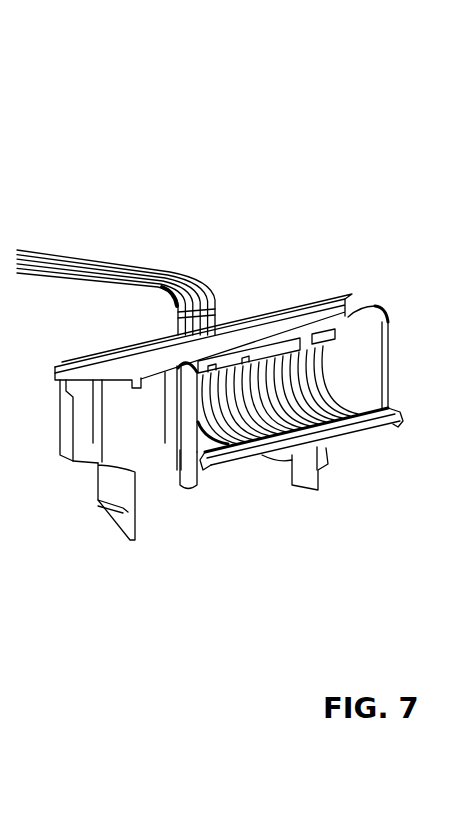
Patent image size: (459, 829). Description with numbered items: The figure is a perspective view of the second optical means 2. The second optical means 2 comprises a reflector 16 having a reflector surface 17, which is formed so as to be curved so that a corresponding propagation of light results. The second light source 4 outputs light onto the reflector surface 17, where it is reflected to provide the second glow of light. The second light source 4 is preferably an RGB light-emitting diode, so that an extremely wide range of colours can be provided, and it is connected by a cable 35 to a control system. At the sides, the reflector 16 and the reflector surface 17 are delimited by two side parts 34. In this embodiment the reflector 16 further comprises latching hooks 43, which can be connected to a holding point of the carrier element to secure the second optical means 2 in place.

The second optical means 2 is at (323, 321).
The second light source 4 is at (228, 363).
The reflector 16 is at (266, 390).
The reflector surface 17 is at (229, 445).
The side parts 34 is at (381, 358).
The cable 35 is at (125, 268).
The latching hooks 43 is at (116, 528).